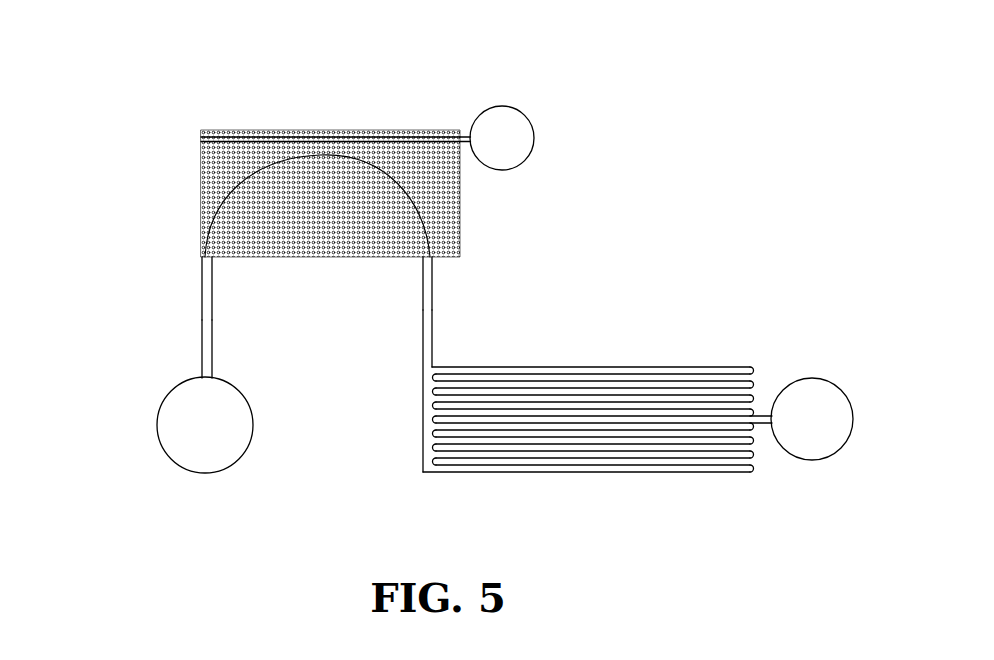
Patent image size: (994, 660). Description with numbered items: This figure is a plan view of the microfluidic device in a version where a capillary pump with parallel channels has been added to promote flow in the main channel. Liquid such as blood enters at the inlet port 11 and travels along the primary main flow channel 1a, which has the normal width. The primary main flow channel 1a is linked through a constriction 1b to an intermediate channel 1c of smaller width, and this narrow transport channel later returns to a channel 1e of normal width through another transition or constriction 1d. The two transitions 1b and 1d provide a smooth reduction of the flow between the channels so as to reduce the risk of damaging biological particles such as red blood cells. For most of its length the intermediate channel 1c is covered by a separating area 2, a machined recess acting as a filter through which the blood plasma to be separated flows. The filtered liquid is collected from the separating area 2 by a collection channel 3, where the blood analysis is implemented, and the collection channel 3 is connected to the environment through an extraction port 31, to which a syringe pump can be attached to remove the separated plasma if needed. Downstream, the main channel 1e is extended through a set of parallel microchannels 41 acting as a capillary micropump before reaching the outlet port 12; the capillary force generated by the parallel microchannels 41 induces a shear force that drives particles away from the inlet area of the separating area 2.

The primary main flow channel 1a is at (204, 361).
The constriction 1b is at (200, 275).
The intermediate channel 1c is at (235, 190).
The transition or constriction 1d is at (432, 280).
The channel 1e is at (432, 327).
The separating area 2 is at (440, 183).
The collection channel 3 is at (323, 91).
The extraction port 31 is at (505, 140).
The parallel microchannels 41 is at (585, 370).
The inlet port 11 is at (196, 459).
The outlet port 12 is at (814, 425).